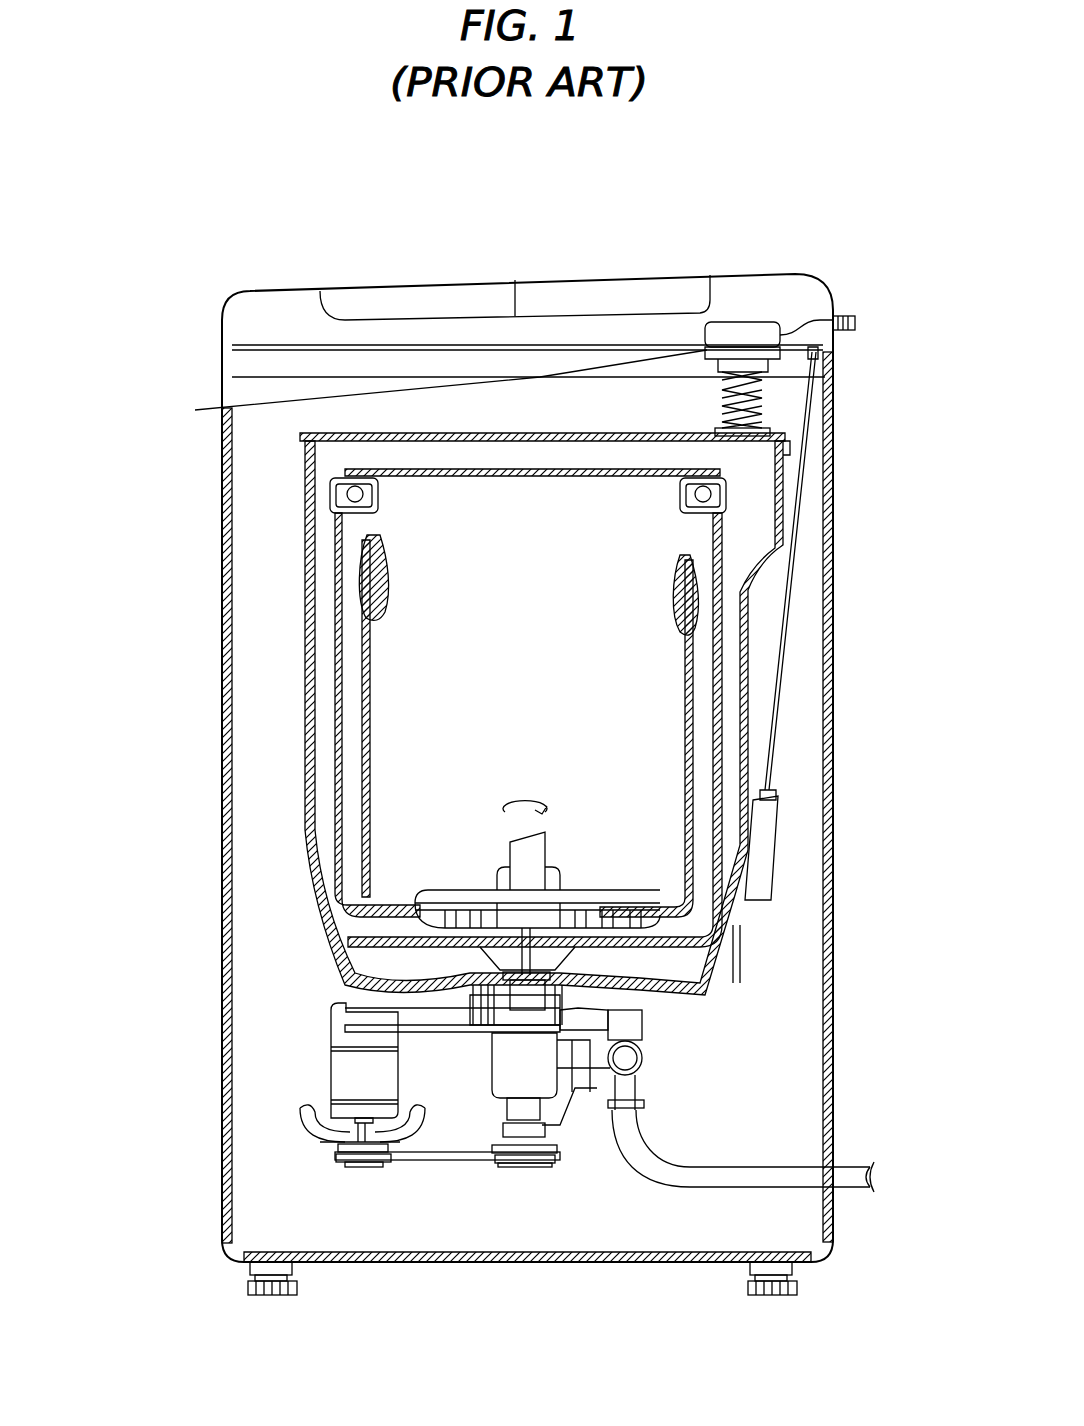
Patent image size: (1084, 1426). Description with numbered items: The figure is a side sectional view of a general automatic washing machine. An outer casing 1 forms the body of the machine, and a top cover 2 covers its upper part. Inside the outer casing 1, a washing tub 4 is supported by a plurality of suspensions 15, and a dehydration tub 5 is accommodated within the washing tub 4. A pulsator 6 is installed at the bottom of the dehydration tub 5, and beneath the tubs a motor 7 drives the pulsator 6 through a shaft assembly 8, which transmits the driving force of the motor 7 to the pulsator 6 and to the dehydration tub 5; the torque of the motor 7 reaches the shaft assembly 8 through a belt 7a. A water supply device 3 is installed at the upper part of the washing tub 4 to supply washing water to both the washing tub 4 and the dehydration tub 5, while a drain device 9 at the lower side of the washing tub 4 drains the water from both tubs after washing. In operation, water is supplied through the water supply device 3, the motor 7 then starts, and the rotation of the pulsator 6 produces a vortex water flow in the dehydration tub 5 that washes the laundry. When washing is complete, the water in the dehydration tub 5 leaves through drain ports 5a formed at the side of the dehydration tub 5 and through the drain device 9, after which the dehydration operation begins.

The outer casing 1 is at (833, 649).
The top cover 2 is at (398, 302).
The water supply device 3 is at (748, 330).
The washing tub 4 is at (749, 683).
The dehydration tub 5 is at (722, 596).
The drain ports 5a is at (717, 696).
The pulsator 6 is at (458, 897).
The motor 7 is at (353, 1077).
The belt 7a is at (444, 1157).
The shaft assembly 8 is at (540, 1082).
The drain device 9 is at (645, 1048).
The suspensions 15 is at (773, 757).